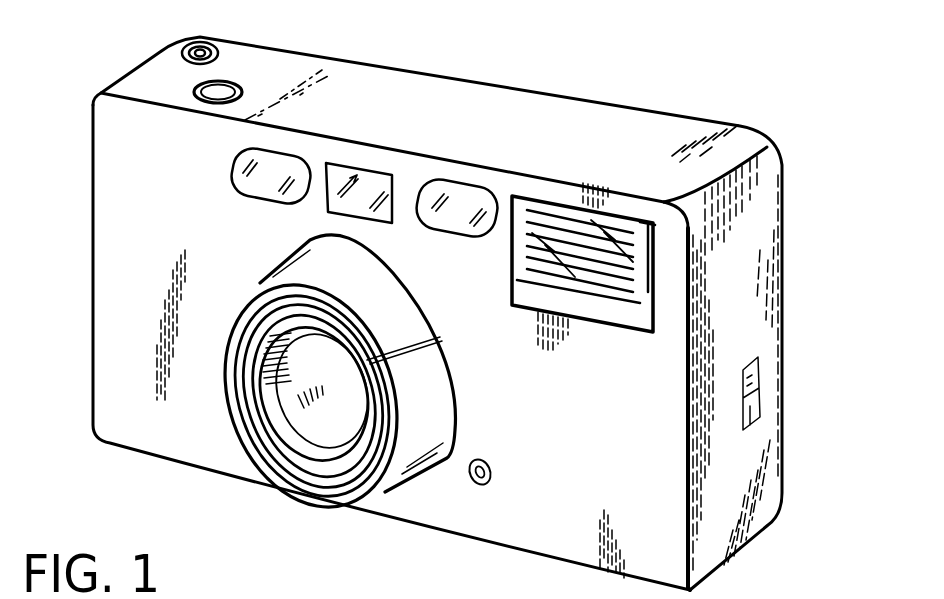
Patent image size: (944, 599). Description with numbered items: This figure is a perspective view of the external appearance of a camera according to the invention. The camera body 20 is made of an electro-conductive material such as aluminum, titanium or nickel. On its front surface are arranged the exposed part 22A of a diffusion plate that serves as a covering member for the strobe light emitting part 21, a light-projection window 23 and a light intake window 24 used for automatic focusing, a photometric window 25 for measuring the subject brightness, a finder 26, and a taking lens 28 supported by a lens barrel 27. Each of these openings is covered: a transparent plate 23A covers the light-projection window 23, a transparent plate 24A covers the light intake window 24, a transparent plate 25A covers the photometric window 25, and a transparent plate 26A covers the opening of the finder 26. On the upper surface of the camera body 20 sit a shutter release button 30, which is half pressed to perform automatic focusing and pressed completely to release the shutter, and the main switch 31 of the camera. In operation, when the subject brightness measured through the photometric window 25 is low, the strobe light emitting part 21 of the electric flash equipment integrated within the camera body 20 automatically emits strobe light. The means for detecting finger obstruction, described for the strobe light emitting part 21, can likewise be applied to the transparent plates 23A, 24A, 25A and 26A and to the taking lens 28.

The camera body 20 is at (787, 187).
The strobe light emitting part 21 is at (565, 228).
The exposed part of diffusion plate 22A is at (613, 226).
The light-projection window 23 is at (272, 160).
The transparent plate 23A is at (254, 184).
The light intake window 24 is at (463, 194).
The transparent plate 24A is at (447, 225).
The photometric window 25 is at (478, 483).
The transparent plate 25A is at (484, 461).
The finder 26 is at (369, 180).
The transparent plate 26A is at (347, 204).
The lens barrel 27 is at (430, 470).
The taking lens 28 is at (332, 428).
The shutter release button 30 is at (220, 90).
The main switch 31 is at (182, 55).